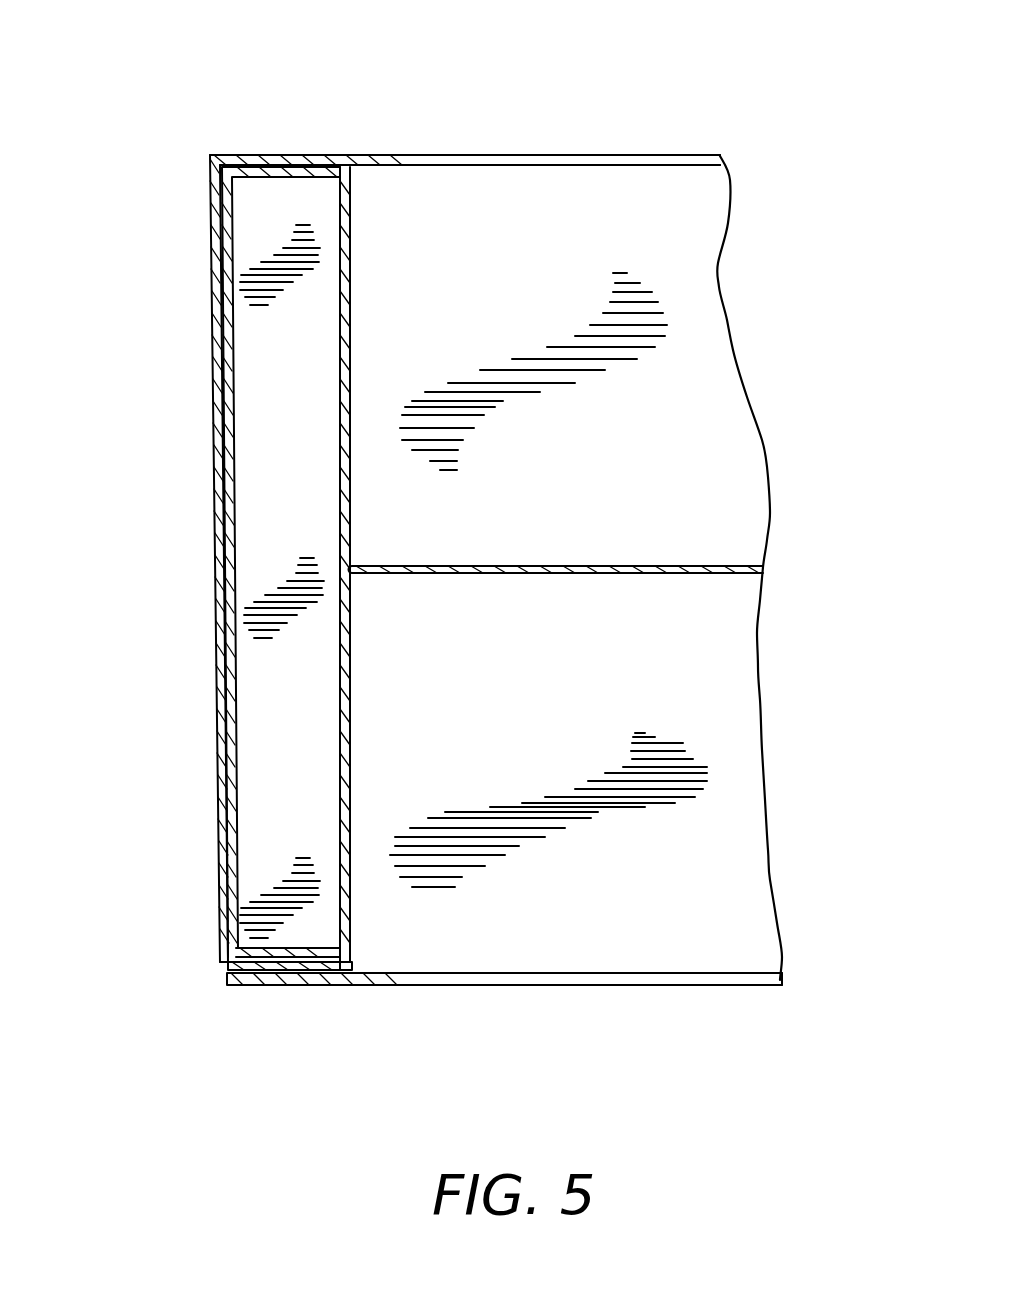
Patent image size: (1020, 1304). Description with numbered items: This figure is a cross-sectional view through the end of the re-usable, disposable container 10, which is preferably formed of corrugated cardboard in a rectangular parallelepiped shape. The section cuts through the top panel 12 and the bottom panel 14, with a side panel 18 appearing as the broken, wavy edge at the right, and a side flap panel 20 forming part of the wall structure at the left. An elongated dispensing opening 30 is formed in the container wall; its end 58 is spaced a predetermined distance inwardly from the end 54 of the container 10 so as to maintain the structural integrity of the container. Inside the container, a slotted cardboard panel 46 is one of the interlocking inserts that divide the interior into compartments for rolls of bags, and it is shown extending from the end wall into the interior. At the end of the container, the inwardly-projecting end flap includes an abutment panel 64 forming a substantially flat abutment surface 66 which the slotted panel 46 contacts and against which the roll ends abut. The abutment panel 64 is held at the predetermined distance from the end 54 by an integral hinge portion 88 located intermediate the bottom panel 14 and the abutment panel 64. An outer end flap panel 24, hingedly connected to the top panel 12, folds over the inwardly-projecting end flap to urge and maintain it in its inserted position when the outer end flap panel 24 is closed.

The container 10 is at (491, 127).
The top panel 12 is at (699, 160).
The bottom panel 14 is at (708, 986).
The side panel 18 is at (772, 880).
The side flap panel 20 is at (294, 568).
The outer end flap panel 24 is at (183, 562).
The dispensing opening 30 is at (593, 155).
The slotted cardboard panel 46 is at (718, 565).
The end of the container 54 is at (213, 727).
The end of the dispensing opening 58 is at (413, 155).
The abutment panel 64 is at (350, 290).
The abutment surface 66 is at (431, 568).
The hinge portion 88 is at (310, 976).